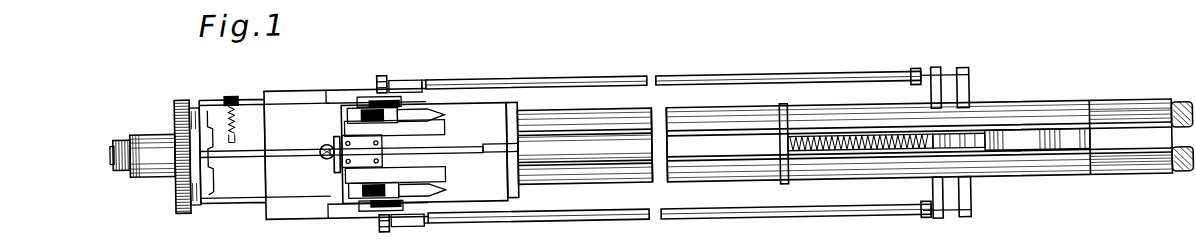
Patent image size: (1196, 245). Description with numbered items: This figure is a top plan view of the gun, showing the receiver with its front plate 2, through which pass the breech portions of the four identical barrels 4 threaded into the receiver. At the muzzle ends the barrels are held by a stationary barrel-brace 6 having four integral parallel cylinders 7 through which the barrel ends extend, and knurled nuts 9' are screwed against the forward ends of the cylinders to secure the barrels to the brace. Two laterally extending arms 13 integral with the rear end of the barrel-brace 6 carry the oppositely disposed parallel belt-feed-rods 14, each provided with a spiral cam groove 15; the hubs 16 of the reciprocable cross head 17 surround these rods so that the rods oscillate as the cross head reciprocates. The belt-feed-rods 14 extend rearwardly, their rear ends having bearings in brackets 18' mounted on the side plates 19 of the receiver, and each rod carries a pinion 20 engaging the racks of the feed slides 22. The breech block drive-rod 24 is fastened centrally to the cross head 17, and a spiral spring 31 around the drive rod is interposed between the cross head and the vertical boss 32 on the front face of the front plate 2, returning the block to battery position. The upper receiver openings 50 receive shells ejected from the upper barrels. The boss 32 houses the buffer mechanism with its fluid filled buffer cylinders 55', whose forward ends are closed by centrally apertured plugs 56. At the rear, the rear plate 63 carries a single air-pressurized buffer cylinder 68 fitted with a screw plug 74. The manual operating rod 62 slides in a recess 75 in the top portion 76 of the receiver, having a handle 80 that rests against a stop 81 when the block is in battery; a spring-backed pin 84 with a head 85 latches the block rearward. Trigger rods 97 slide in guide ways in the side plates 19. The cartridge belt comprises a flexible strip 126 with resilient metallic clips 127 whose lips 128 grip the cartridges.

The front plate 2 is at (510, 102).
The barrels 4 is at (1027, 116).
The barrel-brace 6 is at (1037, 139).
The cylinders 7 is at (1120, 116).
The knurled nuts 9' is at (1182, 140).
The laterally extending arms 13 is at (972, 101).
The belt-feed-rods 14 is at (735, 80).
The spiral cam groove 15 is at (915, 77).
The hubs 16 is at (936, 73).
The cross head 17 is at (935, 191).
The brackets 18' is at (423, 148).
The side plates 19 is at (333, 90).
The pinion 20 is at (383, 71).
The feed slides 22 is at (402, 100).
The breech block drive-rod 24 is at (848, 139).
The spiral spring 31 is at (878, 155).
The vertical boss 32 is at (515, 148).
The upper receiver openings 50 is at (445, 124).
The buffer cylinders 55' is at (665, 135).
The centrally apertured plugs 56 is at (790, 128).
The manual operating rod 62 is at (472, 148).
The rear plate 63 is at (207, 163).
The buffer cylinder 68 is at (160, 169).
The screw plug 74 is at (118, 162).
The recess 75 is at (470, 158).
The top portion 76 is at (478, 103).
The handle 80 is at (326, 141).
The stop 81 is at (335, 163).
The spring-backed pin 84 is at (228, 117).
The head 85 is at (232, 131).
The trigger rods 97 is at (192, 93).
The strip 126 is at (377, 153).
The metallic clips 127 is at (383, 99).
The lips 128 is at (391, 152).